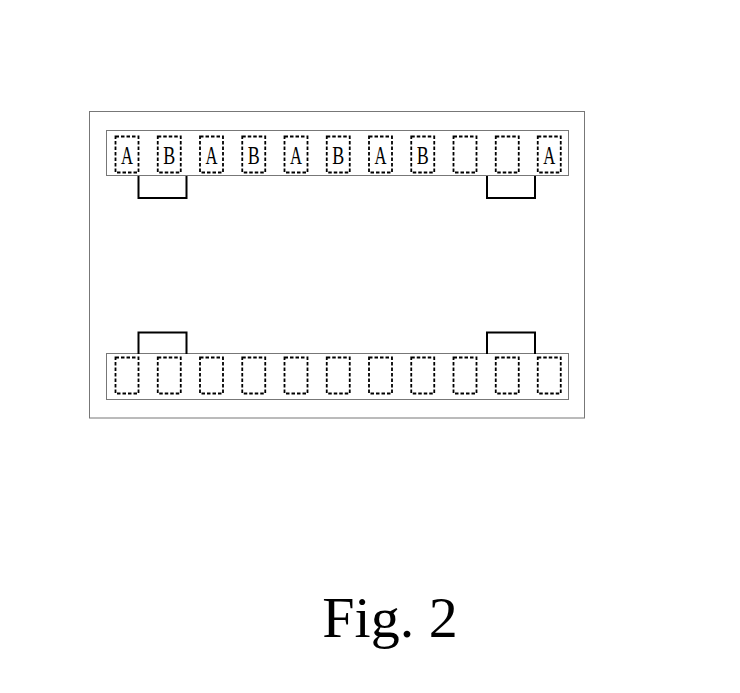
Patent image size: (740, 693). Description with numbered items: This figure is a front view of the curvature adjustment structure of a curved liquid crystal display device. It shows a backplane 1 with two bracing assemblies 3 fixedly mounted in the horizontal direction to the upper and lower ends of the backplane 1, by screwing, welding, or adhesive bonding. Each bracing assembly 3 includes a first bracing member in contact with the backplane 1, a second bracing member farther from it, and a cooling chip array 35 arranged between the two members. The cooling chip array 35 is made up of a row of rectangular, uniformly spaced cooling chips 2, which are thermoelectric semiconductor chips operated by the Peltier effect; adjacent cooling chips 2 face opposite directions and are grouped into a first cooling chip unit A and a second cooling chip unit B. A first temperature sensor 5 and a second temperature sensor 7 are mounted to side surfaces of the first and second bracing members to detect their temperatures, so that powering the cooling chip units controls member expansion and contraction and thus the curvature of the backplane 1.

The backplane 1 is at (550, 277).
The cooling chip 2 is at (462, 157).
The bracing assembly 3 is at (443, 393).
The first temperature sensor 5 is at (160, 344).
The second temperature sensor 7 is at (512, 343).
The cooling chip array 35 is at (517, 155).